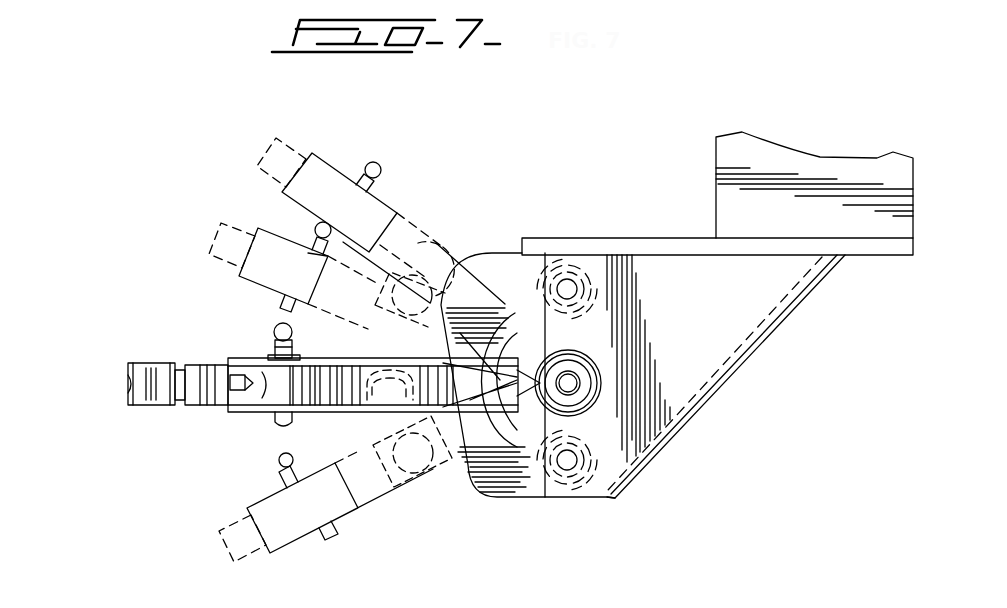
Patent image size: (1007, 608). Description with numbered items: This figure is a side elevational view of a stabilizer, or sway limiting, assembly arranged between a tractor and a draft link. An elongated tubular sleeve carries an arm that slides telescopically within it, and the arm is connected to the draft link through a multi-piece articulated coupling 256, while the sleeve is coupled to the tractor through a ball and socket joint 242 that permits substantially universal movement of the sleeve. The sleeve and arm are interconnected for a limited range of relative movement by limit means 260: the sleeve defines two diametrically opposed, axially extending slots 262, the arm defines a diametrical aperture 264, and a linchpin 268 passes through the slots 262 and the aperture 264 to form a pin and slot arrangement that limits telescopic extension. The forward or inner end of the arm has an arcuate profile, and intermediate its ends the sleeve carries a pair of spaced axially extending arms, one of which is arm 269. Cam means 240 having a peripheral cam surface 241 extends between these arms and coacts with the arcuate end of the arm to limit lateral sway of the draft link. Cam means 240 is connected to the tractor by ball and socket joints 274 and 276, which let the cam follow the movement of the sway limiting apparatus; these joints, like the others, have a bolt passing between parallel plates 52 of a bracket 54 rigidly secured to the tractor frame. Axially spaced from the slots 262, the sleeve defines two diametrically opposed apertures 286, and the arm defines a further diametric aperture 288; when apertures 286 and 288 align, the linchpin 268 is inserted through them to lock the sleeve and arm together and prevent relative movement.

The parallel plates 52 is at (767, 307).
The bracket 54 is at (720, 332).
The cam means 240 is at (510, 492).
The peripheral cam surface 241 is at (472, 272).
The ball and socket joint 242 is at (587, 378).
The multi-piece articulated coupling 256 is at (150, 356).
The limit means 260 is at (296, 341).
The axially extending slots 262 is at (246, 356).
The diametrical aperture 264 is at (280, 393).
The linchpin 268 is at (290, 424).
The axially extending arm 269 is at (395, 400).
The ball and socket joint 274 is at (583, 265).
The ball and socket joint 276 is at (574, 493).
The diametrically opposed apertures 286 is at (378, 352).
The diametric aperture 288 is at (388, 405).